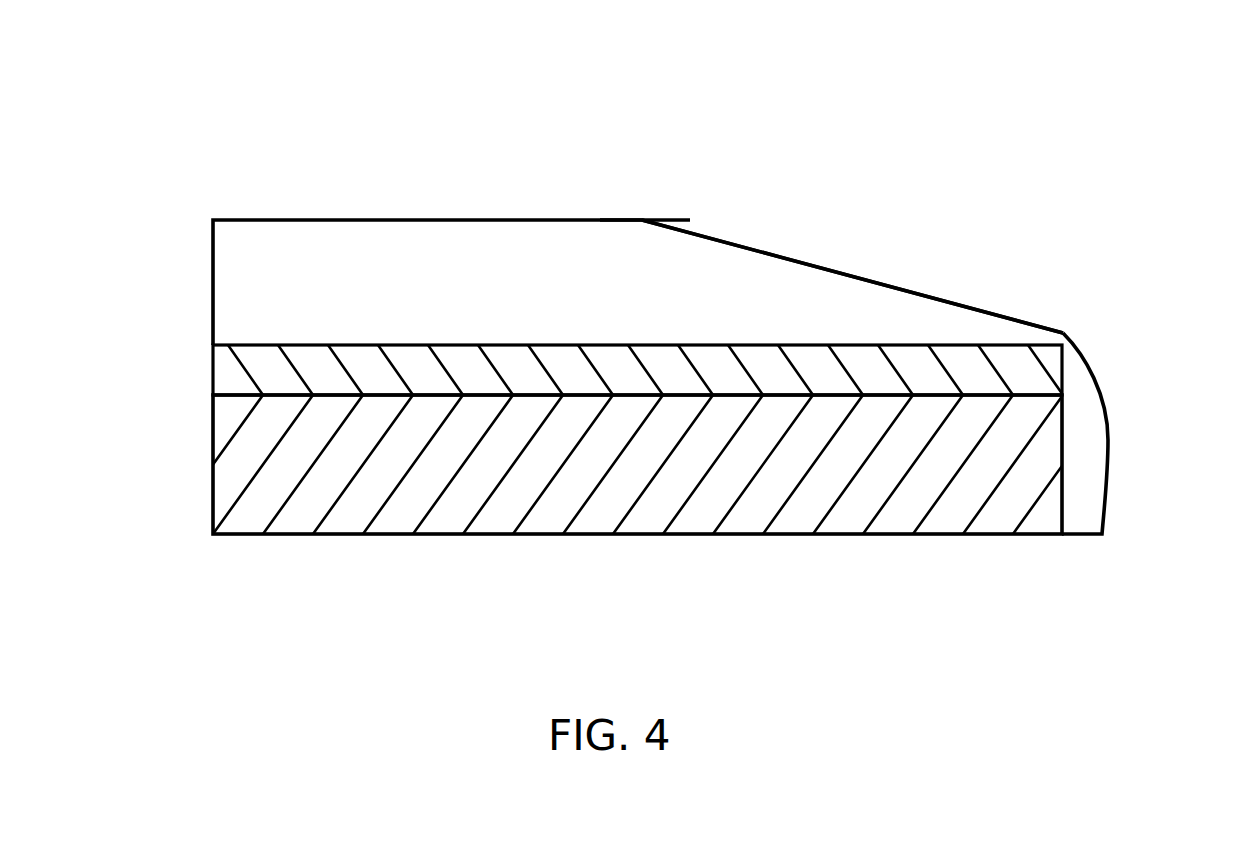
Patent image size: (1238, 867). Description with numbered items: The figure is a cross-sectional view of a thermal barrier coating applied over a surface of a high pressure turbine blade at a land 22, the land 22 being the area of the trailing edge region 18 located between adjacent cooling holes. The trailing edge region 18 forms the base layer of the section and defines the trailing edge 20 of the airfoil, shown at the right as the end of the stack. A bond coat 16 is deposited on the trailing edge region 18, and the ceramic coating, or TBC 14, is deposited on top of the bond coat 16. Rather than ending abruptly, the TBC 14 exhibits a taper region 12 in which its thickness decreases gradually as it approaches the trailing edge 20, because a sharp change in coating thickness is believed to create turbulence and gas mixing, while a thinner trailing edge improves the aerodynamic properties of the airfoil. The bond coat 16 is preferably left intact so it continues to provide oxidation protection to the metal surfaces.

The taper region 12 is at (849, 271).
The ceramic coating (TBC) 14 is at (190, 198).
The bond coat 16 is at (190, 347).
The trailing edge region 18 is at (190, 405).
The trailing edge 20 is at (1110, 437).
The land 22 is at (588, 218).